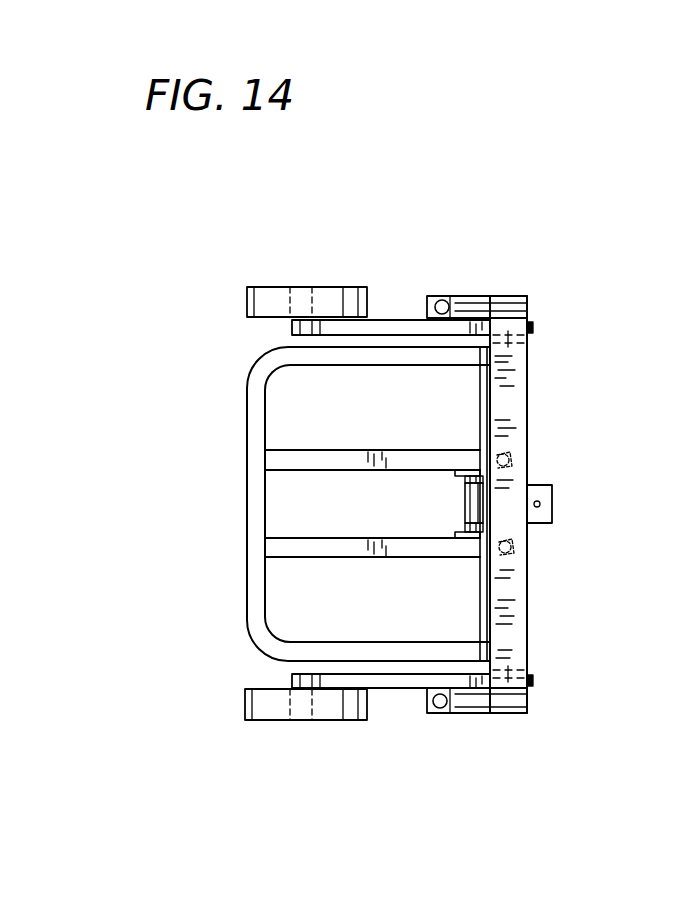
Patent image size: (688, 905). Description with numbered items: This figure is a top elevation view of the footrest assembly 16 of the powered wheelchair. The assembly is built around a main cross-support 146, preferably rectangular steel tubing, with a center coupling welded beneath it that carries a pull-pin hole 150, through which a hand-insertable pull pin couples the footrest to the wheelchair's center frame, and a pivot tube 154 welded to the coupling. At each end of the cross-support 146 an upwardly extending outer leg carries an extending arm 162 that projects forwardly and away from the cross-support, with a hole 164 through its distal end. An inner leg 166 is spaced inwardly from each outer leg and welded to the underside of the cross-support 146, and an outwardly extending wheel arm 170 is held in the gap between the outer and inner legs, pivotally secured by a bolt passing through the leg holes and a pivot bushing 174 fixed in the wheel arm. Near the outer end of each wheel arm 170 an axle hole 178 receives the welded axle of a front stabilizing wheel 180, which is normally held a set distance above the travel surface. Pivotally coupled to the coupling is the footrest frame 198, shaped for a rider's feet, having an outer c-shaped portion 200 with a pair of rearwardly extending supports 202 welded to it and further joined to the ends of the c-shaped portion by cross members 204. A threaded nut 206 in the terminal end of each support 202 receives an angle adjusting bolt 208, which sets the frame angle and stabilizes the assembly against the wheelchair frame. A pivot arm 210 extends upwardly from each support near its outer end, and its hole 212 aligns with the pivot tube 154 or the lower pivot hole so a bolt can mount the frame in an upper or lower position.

The footrest assembly 16 is at (245, 379).
The main cross-support 146 is at (528, 390).
The pull-pin hole 150 is at (545, 494).
The pivot tube 154 is at (465, 500).
The extending arm 162 is at (455, 296).
The hole 164 is at (425, 303).
The inner leg 166 is at (528, 340).
The wheel arm 170 is at (393, 318).
The pivot bushing 174 is at (538, 300).
The axle hole 178 is at (292, 331).
The front stabilizing wheel 180 is at (262, 287).
The footrest frame 198 is at (248, 490).
The outer c-shaped portion 200 is at (265, 650).
The rearwardly extending supports 202 is at (287, 470).
The cross members 204 is at (480, 372).
The threaded nut 206 is at (528, 450).
The angle adjusting bolt 208 is at (528, 465).
The pivot arm 210 is at (455, 468).
The hole 212 is at (462, 496).